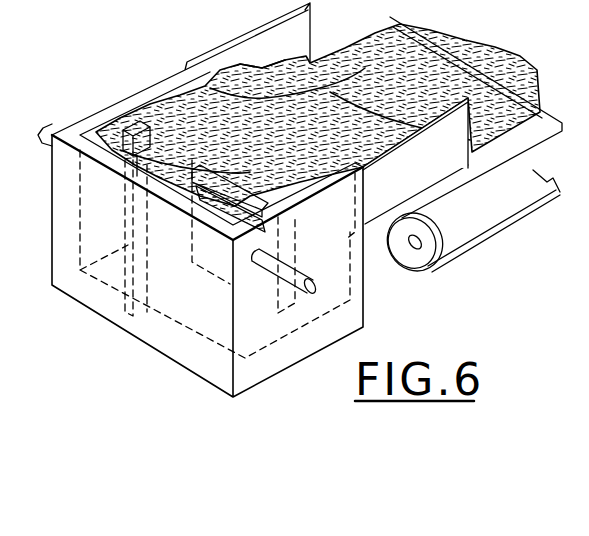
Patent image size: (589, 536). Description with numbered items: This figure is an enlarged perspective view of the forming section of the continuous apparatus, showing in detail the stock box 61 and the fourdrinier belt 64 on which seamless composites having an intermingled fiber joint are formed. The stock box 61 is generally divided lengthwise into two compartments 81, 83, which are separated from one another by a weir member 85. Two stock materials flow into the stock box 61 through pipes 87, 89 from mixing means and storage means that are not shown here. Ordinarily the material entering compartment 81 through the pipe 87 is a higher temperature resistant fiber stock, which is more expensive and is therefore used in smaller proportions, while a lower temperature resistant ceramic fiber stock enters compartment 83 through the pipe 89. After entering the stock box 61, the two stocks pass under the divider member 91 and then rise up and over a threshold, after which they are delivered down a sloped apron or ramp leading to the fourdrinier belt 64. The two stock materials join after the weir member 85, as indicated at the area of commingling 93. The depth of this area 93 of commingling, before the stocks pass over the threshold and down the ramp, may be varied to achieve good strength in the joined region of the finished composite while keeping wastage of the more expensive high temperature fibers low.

The stock box 61 is at (238, 36).
The fourdrinier belt 64 is at (498, 228).
The compartment 81 is at (119, 138).
The compartment 83 is at (330, 183).
The weir member 85 is at (203, 176).
The pipe 87 is at (46, 130).
The pipe 89 is at (257, 295).
The divider member 91 is at (257, 197).
The area of commingling 93 is at (252, 147).